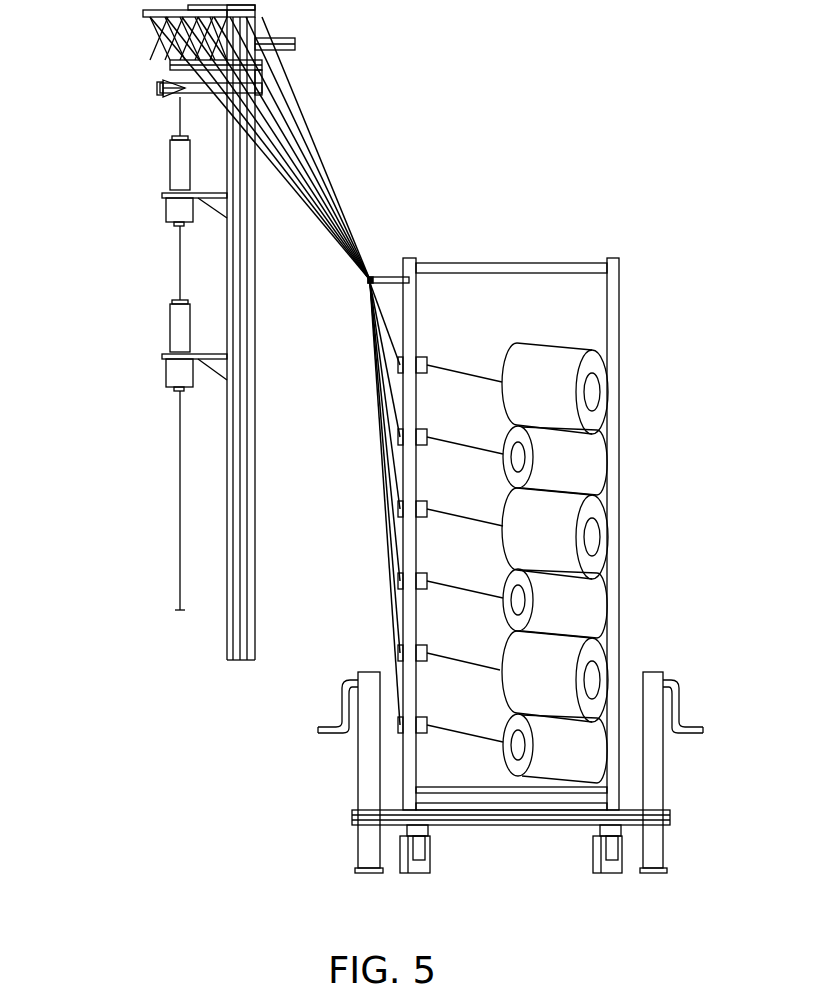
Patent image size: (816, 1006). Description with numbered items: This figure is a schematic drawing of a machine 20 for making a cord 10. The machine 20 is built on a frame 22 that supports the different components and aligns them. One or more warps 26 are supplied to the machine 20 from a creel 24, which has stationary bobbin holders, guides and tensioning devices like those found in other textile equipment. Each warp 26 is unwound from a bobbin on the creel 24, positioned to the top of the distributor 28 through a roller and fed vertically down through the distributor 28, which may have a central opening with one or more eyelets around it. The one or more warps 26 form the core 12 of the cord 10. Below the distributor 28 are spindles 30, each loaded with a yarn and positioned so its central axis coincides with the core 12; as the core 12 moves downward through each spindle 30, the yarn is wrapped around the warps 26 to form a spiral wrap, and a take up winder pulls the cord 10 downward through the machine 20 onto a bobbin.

The cord 10 is at (180, 472).
The core 12 is at (279, 371).
The machine 20 is at (588, 128).
The frame 22 is at (255, 440).
The creel 24 is at (652, 532).
The warp 26 is at (297, 150).
The distributor 28 is at (98, 48).
The spindle 30 is at (166, 208).